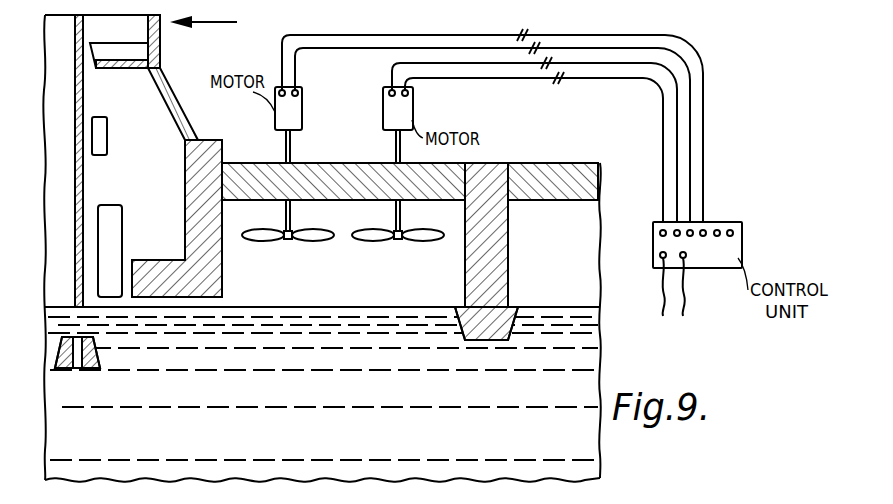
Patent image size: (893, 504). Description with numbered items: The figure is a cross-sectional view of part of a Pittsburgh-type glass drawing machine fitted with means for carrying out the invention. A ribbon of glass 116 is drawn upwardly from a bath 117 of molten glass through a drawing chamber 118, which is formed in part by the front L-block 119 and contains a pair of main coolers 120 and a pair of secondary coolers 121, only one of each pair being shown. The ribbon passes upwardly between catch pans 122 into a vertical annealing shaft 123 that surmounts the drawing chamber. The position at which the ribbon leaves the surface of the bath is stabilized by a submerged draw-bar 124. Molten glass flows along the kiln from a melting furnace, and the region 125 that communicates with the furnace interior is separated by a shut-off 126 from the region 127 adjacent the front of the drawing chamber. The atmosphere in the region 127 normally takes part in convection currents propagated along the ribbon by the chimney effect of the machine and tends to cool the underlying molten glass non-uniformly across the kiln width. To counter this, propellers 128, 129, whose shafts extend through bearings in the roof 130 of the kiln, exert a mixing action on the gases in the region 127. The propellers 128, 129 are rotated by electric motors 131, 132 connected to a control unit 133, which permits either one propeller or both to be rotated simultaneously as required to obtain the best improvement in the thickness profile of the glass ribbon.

The ribbon of glass 116 is at (84, 191).
The bath of molten glass 117 is at (312, 401).
The drawing chamber 118 is at (146, 111).
The front L-block 119 is at (202, 207).
The main cooler 120 is at (110, 214).
The secondary cooler 121 is at (108, 132).
The catch pan 122 is at (118, 58).
The vertical annealing shaft 123 is at (222, 26).
The submerged draw-bar 124 is at (92, 346).
The region in communication with the melting furnace 125 is at (570, 253).
The shut-off 126 is at (478, 195).
The region adjacent the front of the drawing chamber 127 is at (353, 290).
The propeller 128 is at (286, 240).
The propeller 129 is at (401, 240).
The roof of the kiln 130 is at (312, 177).
The electric motor 131 is at (284, 110).
The electric motor 132 is at (400, 110).
The control unit 133 is at (705, 250).